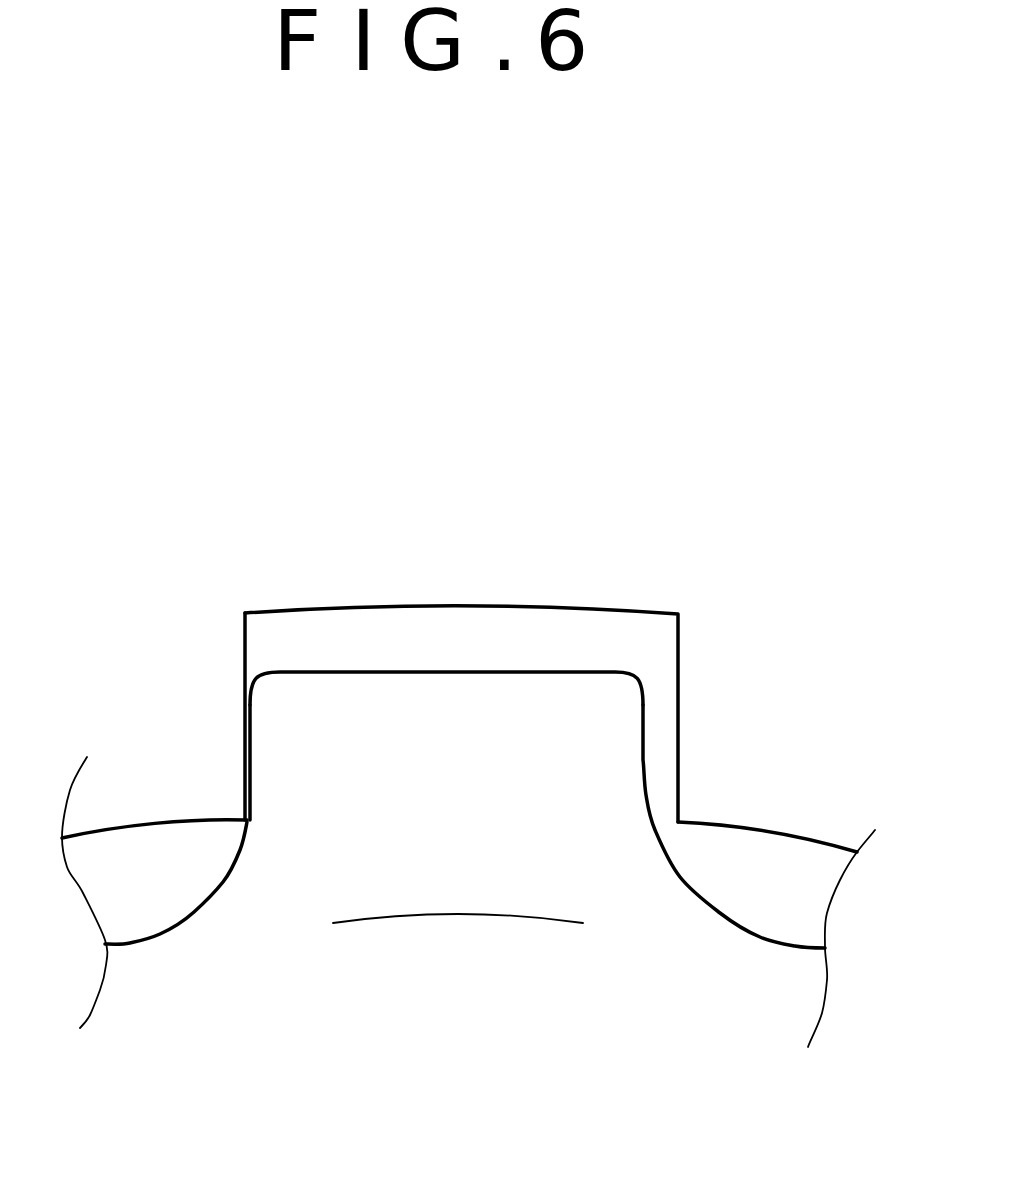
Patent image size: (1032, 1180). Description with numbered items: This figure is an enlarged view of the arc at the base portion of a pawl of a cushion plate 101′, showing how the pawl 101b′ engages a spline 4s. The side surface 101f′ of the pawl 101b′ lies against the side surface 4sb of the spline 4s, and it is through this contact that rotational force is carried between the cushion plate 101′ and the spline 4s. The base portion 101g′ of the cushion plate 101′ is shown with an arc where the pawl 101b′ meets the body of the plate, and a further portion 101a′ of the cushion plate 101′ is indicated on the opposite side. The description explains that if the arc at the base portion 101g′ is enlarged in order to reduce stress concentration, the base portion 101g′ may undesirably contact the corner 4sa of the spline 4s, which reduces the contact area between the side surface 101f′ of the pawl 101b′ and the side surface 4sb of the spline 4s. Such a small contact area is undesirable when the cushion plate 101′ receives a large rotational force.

The side surface of the spline 4sb is at (248, 650).
The cushion plate 101′ is at (430, 647).
The pawl 101b′ is at (643, 693).
The side surface of the pawl 101f′ is at (243, 713).
The base portion of the cushion plate 101g′ is at (243, 807).
The side portion of gate electrode 101a′ is at (672, 923).
The spline 4s is at (768, 823).
The corner of the spline 4sa is at (250, 823).